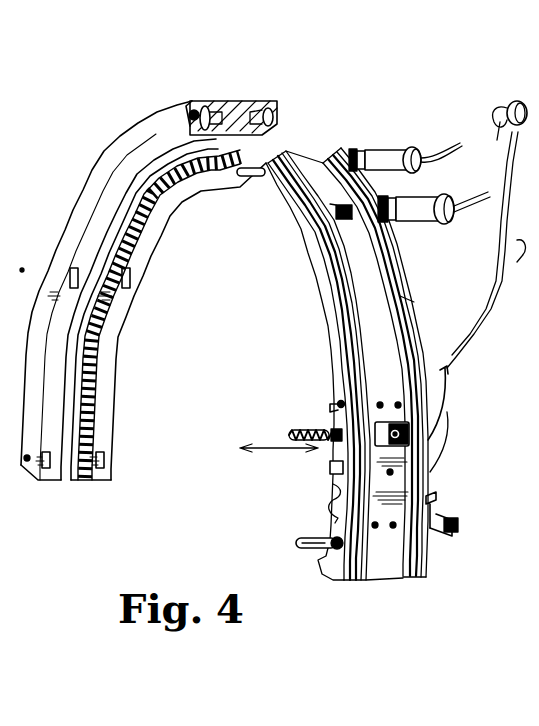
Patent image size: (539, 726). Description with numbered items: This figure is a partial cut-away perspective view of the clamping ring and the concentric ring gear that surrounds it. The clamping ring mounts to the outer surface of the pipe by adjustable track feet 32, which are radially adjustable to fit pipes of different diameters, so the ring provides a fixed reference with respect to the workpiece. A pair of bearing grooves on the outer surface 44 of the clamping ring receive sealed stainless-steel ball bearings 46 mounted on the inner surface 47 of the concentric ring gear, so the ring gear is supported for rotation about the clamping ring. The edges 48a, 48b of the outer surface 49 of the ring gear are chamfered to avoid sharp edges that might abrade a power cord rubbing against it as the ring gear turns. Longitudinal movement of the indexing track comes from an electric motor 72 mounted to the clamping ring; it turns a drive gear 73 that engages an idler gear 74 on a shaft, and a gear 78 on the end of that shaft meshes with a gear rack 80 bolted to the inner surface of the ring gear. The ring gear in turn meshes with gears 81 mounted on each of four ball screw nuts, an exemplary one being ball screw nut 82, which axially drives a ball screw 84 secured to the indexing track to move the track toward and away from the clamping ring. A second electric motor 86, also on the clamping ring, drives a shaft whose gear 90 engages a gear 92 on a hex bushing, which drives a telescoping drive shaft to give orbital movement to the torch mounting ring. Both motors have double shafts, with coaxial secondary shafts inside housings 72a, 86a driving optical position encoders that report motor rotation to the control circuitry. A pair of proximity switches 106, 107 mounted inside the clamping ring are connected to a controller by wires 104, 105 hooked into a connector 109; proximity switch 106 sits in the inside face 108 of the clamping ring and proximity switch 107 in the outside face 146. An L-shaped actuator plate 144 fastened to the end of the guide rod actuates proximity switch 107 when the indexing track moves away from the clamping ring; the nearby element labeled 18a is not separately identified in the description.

The pin 18a is at (312, 547).
The adjustable track feet 32 is at (330, 465).
The outer surface 44 is at (382, 344).
The sealed stainless-steel ball bearings 46 is at (250, 134).
The inner surface 47 is at (146, 222).
The edge 48a is at (279, 110).
The edge 48b is at (185, 102).
The outer surface 49 is at (233, 98).
The electric motor 72 is at (442, 230).
The housing 72a is at (445, 224).
The drive gear 73 is at (394, 222).
The idler gear 74 is at (380, 206).
The gear 78 is at (345, 212).
The gear rack 80 is at (250, 102).
The gears 81 is at (432, 412).
The ball screw nut 82 is at (390, 424).
The ball screw 84 is at (312, 430).
The second electric motor 86 is at (412, 172).
The housing 86a is at (440, 150).
The gear 90 is at (360, 150).
The gear 92 is at (352, 150).
The wire 104 is at (498, 292).
The wire 105 is at (517, 258).
The proximity switch 106 is at (332, 399).
The proximity switch 107 is at (428, 507).
The inside face 108 is at (330, 327).
The connector 109 is at (524, 104).
The L-shaped actuator plate 144 is at (455, 528).
The outside face 146 is at (420, 304).